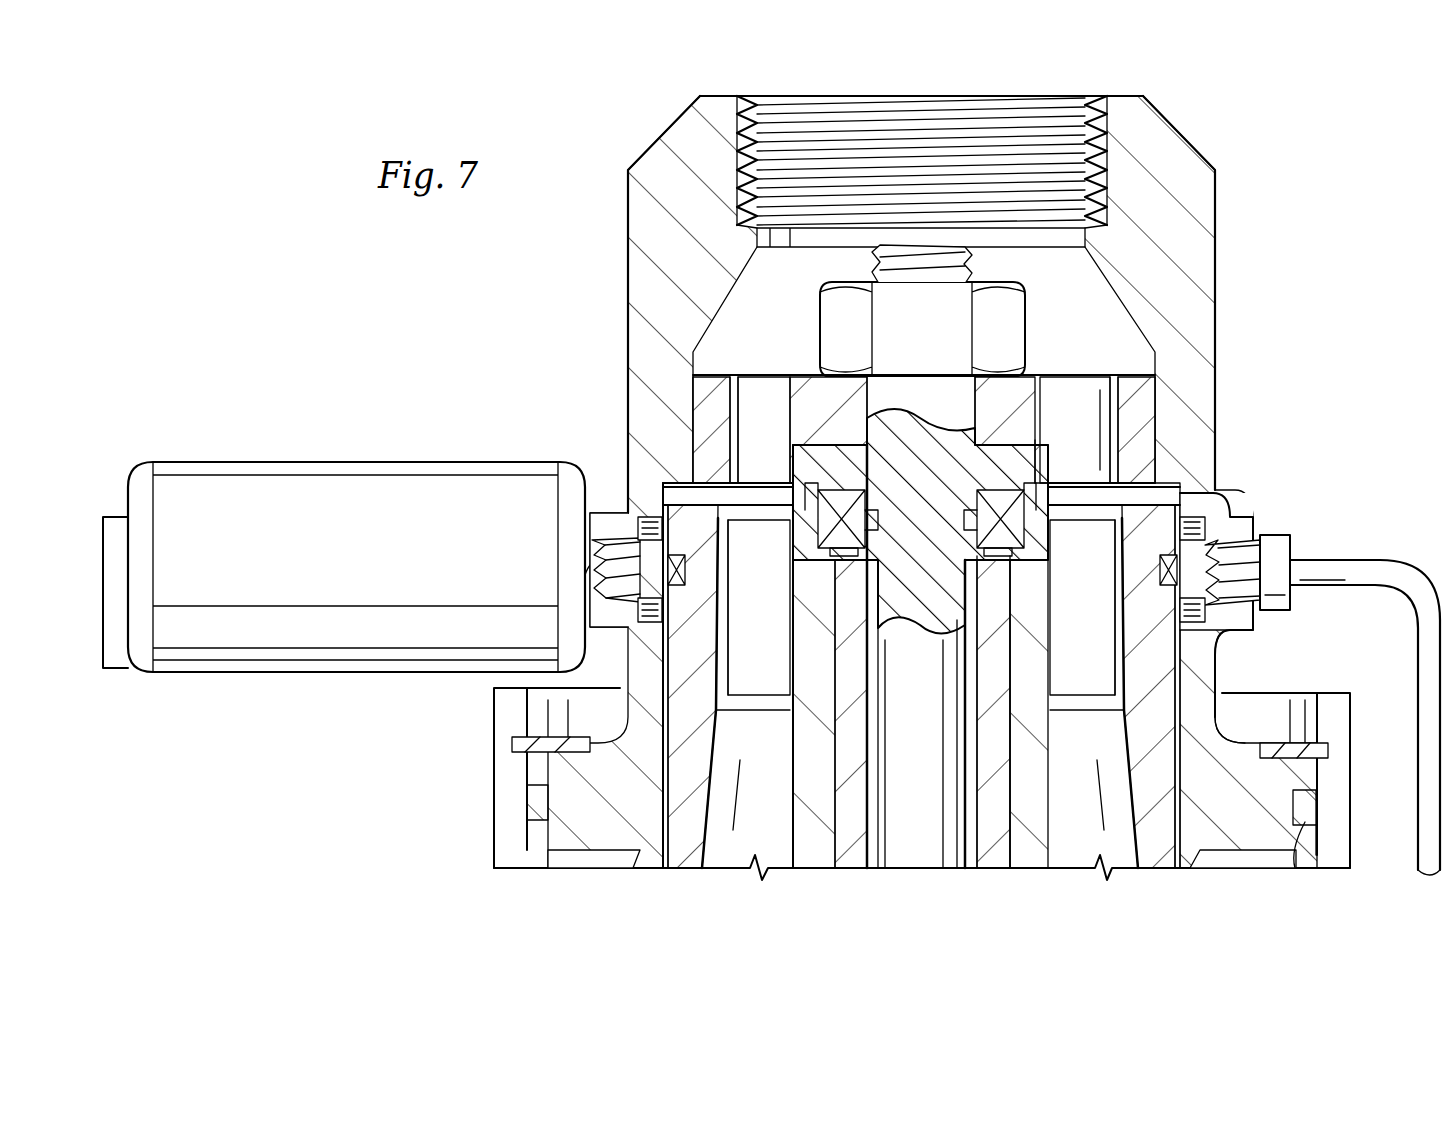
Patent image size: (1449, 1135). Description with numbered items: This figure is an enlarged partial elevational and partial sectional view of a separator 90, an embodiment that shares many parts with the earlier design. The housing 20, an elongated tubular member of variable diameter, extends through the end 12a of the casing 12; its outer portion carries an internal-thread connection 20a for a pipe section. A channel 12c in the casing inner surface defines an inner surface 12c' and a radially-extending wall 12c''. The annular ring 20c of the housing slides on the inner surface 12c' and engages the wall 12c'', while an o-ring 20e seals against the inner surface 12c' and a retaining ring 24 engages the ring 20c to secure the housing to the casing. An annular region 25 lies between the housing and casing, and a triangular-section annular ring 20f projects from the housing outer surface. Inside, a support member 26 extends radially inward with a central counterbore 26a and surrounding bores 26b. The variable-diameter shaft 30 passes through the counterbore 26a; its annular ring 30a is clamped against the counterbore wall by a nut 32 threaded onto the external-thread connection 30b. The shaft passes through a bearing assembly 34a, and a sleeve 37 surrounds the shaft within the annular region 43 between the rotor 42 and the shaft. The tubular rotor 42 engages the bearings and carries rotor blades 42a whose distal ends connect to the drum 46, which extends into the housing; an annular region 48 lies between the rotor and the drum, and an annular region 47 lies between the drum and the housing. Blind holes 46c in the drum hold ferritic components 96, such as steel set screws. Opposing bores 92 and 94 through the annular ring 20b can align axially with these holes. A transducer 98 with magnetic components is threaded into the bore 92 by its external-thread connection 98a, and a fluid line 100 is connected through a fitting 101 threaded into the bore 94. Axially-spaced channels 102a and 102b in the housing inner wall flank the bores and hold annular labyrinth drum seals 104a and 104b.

The casing 12 is at (493, 779).
The end of casing 12a is at (1300, 692).
The channel 12c is at (1324, 876).
The inner surface 12c' is at (501, 740).
The radially-extending wall 12c'' is at (485, 819).
The housing 20 is at (1213, 255).
The internal-thread connection 20a is at (760, 125).
The annular ring 20b is at (1250, 620).
The annular ring 20c is at (1232, 870).
The o-ring 20e is at (1308, 815).
The annular ring 20f is at (1290, 862).
The retaining ring 24 is at (1305, 748).
The annular region 25 is at (572, 870).
The support member 26 is at (1100, 378).
The counterbore 26a is at (838, 438).
The bores 26b is at (778, 385).
The shaft 30 is at (935, 761).
The annular ring 30a is at (1064, 455).
The external-thread connection 30b is at (872, 263).
The nut 32 is at (935, 338).
The bearing assembly 34a is at (817, 520).
The sleeve 37 is at (990, 870).
The rotor 42 is at (1020, 870).
The rotor blades 42a is at (785, 681).
The annular region 43 is at (880, 884).
The drum 46 is at (1152, 870).
The blind holes 46c is at (690, 597).
The annular region 47 is at (665, 870).
The annular region 48 is at (1100, 753).
The separator 90 is at (468, 255).
The bore 92 is at (598, 560).
The bore 94 is at (1288, 550).
The ferritic component 96 is at (690, 570).
The transducer 98 is at (256, 462).
The external-thread connection 98a is at (590, 570).
The fluid line 100 is at (1394, 570).
The fitting 101 is at (1272, 540).
The channel 102a is at (1210, 515).
The channel 102b is at (1200, 632).
The drum seal 104a is at (645, 515).
The drum seal 104b is at (642, 617).